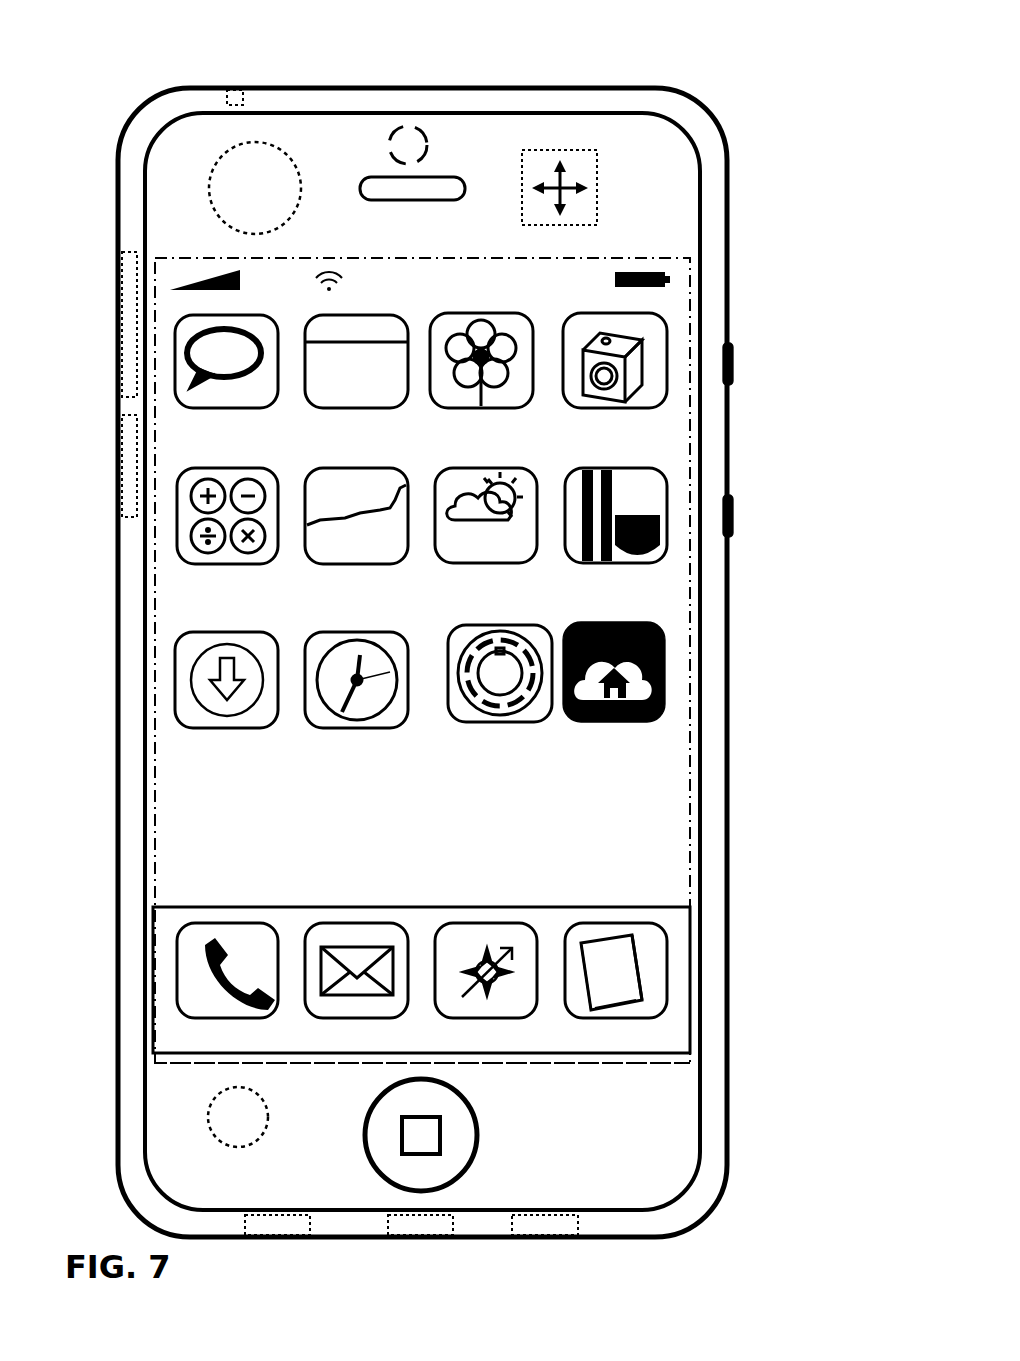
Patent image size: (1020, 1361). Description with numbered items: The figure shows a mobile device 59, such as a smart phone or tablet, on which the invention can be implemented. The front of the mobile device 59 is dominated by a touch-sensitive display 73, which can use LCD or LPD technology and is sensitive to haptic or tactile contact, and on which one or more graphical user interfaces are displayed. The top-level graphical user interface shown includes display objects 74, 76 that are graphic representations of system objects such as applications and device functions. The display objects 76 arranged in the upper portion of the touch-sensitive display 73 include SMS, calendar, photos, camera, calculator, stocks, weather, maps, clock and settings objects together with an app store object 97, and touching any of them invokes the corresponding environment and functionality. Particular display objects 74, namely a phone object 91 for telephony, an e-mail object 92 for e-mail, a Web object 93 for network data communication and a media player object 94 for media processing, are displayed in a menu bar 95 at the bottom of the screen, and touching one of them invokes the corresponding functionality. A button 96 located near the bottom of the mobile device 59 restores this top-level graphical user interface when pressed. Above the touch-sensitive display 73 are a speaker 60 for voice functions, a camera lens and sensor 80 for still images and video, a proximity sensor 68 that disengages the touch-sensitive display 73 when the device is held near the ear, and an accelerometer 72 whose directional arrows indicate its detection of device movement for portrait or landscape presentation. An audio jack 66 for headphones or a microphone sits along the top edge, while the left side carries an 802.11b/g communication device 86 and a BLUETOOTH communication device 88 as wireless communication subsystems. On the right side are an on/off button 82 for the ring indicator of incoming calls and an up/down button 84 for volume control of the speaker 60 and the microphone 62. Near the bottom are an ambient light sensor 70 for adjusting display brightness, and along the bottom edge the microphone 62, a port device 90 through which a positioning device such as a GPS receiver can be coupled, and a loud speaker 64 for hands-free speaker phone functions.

The mobile device 59 is at (510, 90).
The audio jack 66 is at (243, 90).
The proximity sensor 68 is at (225, 205).
The camera lens and sensor 80 is at (428, 147).
The speaker 60 is at (415, 200).
The accelerometer 72 is at (600, 200).
The touch-sensitive display 73 is at (626, 258).
The 802.11b/g communication device 86 is at (130, 302).
The BLUETOOTH communication device 88 is at (128, 468).
The on/off button 82 is at (735, 365).
The up/down button 84 is at (735, 510).
The display objects 76 is at (497, 579).
The app store object 97 is at (227, 632).
The display objects 74 is at (482, 948).
The phone object 91 is at (228, 923).
The e-mail object 92 is at (357, 923).
The Web object 93 is at (487, 923).
The media player object 94 is at (613, 923).
The menu bar 95 is at (575, 1063).
The ambient light sensor 70 is at (240, 1147).
The button 96 is at (478, 1132).
The microphone 62 is at (280, 1237).
The port device 90 is at (430, 1237).
The loud speaker 64 is at (548, 1237).